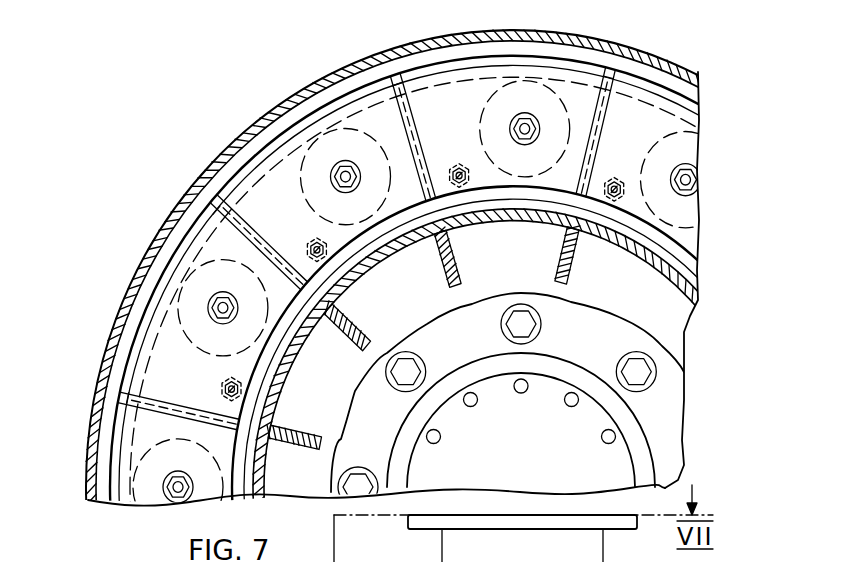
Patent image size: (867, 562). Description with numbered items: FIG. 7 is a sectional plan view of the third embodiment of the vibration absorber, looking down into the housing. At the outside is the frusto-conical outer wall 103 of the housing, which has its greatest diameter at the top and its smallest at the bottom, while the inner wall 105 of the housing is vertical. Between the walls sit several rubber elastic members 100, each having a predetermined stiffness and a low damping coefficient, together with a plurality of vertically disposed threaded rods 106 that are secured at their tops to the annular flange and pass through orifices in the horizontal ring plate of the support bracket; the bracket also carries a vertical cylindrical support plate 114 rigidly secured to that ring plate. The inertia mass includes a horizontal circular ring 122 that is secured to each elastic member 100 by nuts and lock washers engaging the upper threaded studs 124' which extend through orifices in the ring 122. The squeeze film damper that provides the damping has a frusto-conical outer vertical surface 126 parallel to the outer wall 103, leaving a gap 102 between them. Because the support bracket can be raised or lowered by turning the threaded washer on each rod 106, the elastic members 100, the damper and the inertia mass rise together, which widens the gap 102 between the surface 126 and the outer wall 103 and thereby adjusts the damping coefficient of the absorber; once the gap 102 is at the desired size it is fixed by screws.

The rubber elastic member 100 is at (490, 97).
The gap 102 is at (97, 503).
The outer wall 103 is at (102, 443).
The inner wall 105 is at (292, 370).
The threaded rod 106 is at (243, 390).
The vertical cylindrical support plate 114 is at (290, 336).
The horizontal circular ring 122 is at (262, 460).
The upper threaded stud 124' is at (178, 490).
The frusto-conical outer vertical surface 126 is at (118, 500).